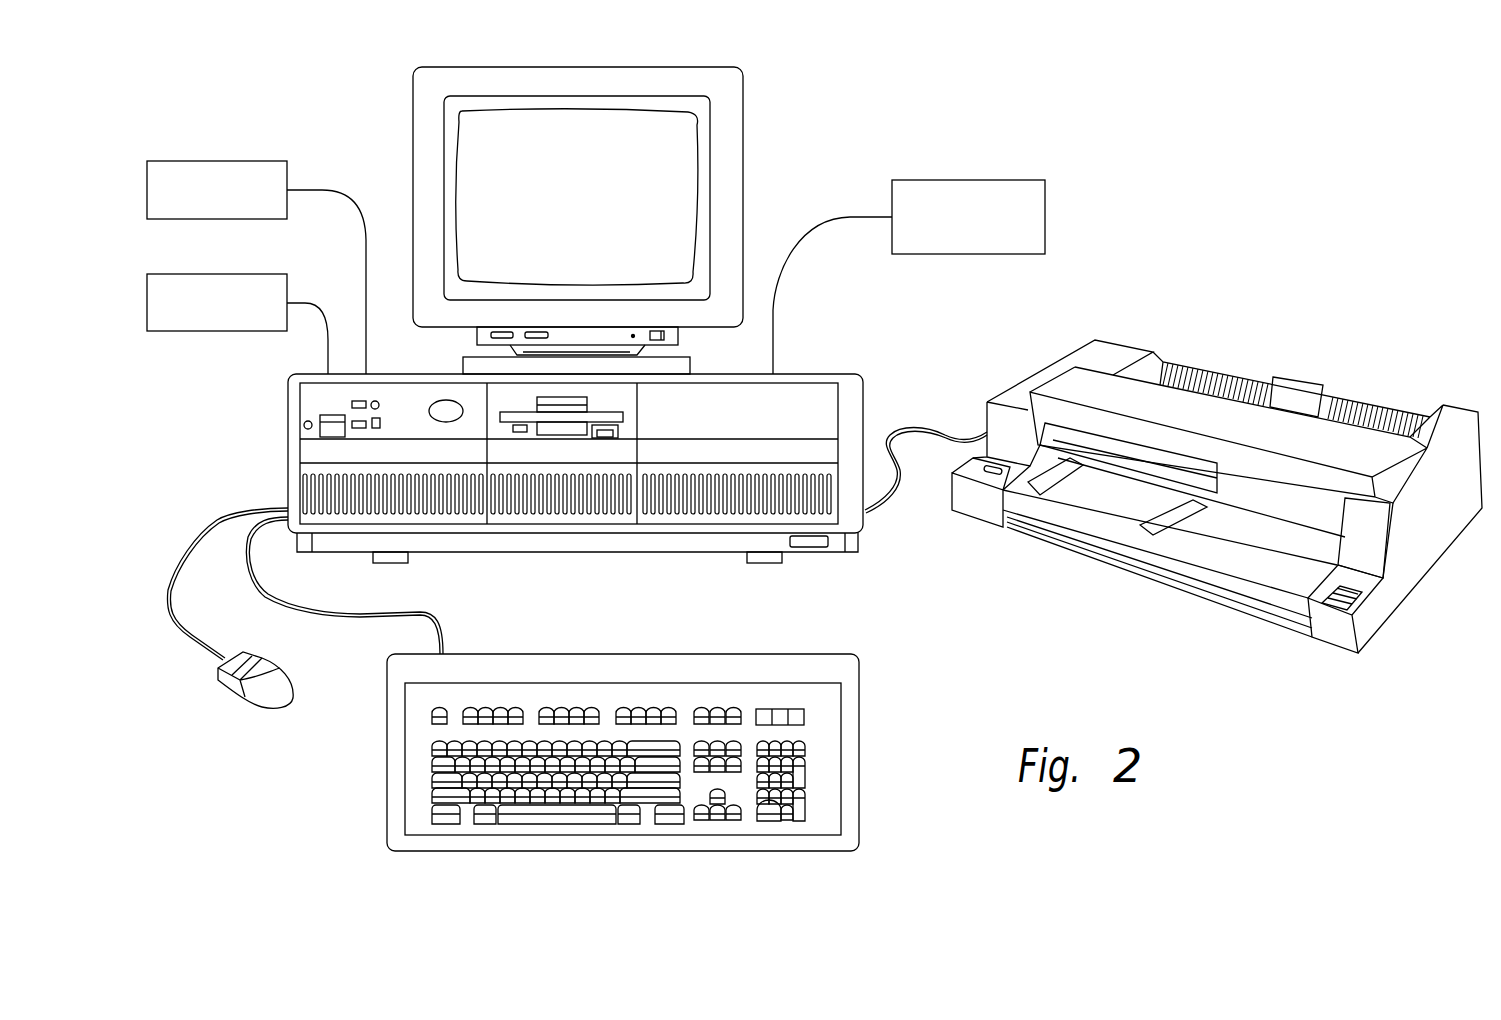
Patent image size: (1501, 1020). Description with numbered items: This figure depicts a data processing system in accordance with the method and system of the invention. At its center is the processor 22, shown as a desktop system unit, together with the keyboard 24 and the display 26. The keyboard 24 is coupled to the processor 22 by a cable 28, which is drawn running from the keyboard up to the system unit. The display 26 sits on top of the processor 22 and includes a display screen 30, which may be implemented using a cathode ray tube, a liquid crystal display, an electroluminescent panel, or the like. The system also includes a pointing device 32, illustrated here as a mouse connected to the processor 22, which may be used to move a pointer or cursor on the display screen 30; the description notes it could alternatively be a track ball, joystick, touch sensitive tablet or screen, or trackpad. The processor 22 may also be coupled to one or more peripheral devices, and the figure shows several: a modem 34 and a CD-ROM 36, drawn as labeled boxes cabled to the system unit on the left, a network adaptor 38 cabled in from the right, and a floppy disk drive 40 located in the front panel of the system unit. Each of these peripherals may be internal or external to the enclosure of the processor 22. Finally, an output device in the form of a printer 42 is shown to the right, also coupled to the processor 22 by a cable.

The processor 22 is at (578, 445).
The keyboard 24 is at (699, 651).
The display 26 is at (752, 214).
The cable 28 is at (441, 622).
The display screen 30 is at (657, 148).
The pointing device 32 is at (222, 697).
The modem 34 is at (183, 161).
The CD-ROM 36 is at (183, 273).
The network adaptor 38 is at (1008, 180).
The floppy disk drive 40 is at (557, 425).
The printer 42 is at (1005, 364).